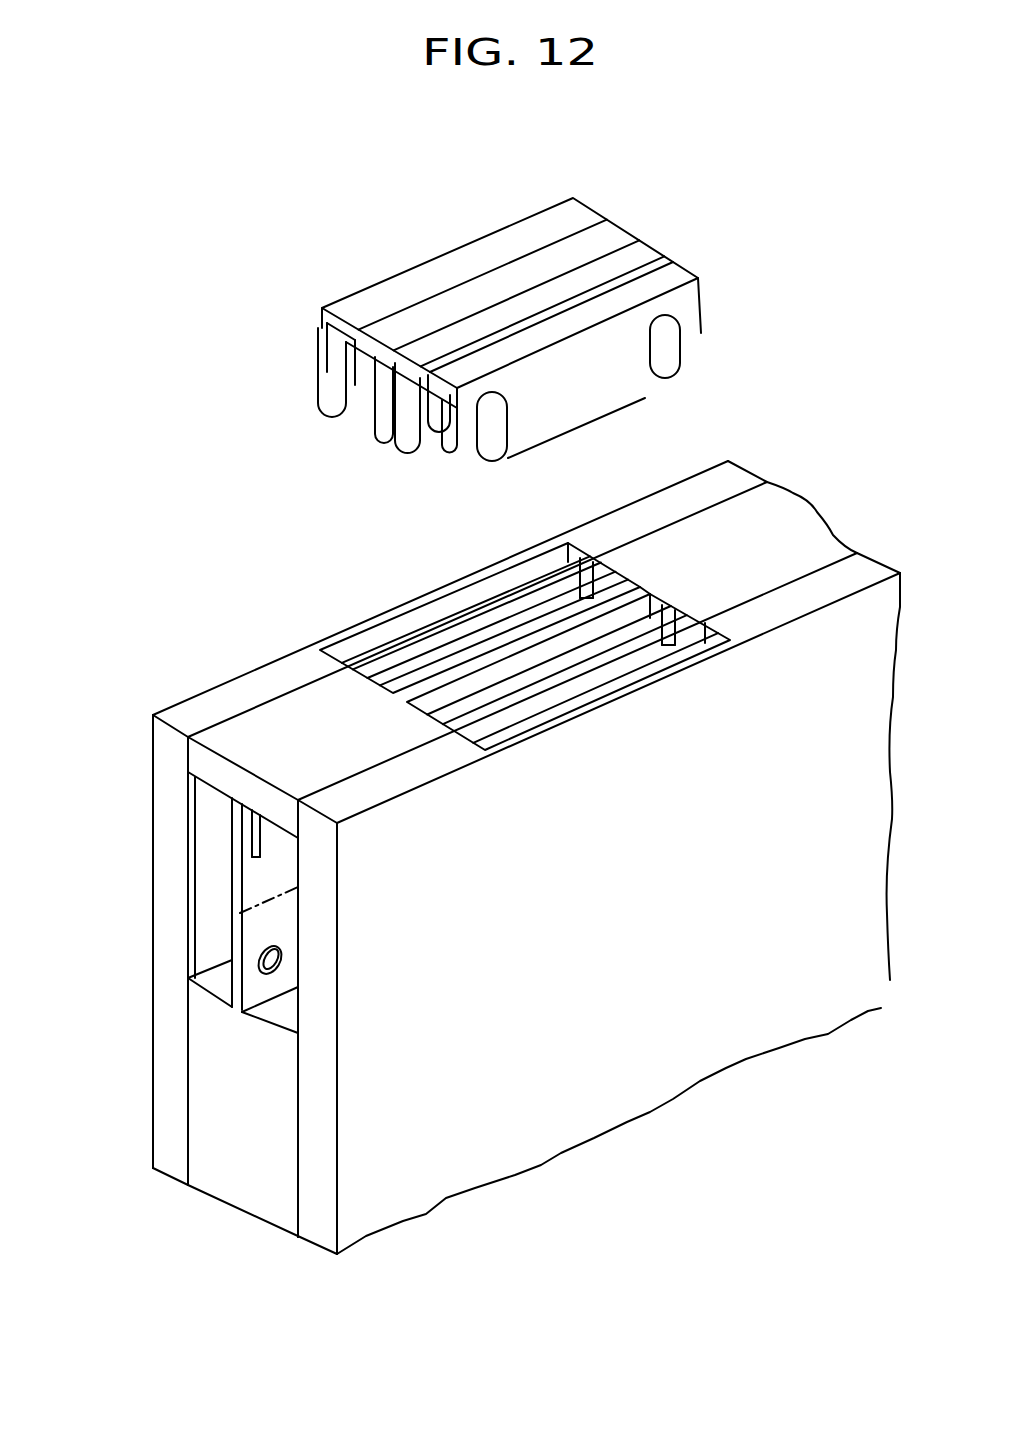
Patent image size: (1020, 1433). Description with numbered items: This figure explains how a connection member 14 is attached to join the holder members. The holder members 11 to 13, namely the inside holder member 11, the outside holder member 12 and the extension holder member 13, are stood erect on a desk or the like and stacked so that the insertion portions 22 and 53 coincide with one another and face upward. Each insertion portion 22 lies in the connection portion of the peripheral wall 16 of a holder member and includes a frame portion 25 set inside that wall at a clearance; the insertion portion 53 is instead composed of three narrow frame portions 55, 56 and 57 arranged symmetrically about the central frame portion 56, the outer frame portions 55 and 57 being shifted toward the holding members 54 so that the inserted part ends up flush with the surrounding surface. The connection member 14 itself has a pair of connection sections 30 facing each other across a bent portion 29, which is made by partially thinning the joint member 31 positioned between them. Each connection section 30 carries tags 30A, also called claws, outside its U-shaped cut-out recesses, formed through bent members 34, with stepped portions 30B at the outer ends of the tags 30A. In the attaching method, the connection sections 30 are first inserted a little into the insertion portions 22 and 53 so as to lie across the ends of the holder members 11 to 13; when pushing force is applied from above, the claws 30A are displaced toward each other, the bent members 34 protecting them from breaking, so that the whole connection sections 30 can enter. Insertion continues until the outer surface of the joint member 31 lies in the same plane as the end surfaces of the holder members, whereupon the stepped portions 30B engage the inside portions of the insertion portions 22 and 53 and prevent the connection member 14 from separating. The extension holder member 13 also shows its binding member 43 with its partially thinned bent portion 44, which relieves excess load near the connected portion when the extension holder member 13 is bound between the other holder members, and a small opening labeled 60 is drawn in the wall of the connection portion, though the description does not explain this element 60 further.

The connection member 14 is at (509, 236).
The bent portion 29 is at (456, 276).
The joint member 31 is at (378, 292).
The connection section 30 is at (598, 398).
The tag 30A is at (413, 438).
The stepped portion 30B is at (318, 356).
The bent member 34 is at (503, 442).
The inside holder member 11 is at (165, 797).
The outside holder member 12 is at (538, 1124).
The extension holder member 13 is at (228, 1158).
The peripheral wall 16 is at (163, 967).
The insertion portion 22 is at (407, 620).
The frame portion 25 is at (453, 610).
The binding member 43 is at (275, 868).
The bent portion 44 is at (238, 915).
The insertion portion 53 is at (620, 623).
The holding member 54 is at (276, 835).
The frame portion 55 is at (410, 675).
The central frame portion 56 is at (550, 630).
The frame portion 57 is at (510, 687).
The hole 60 is at (283, 953).